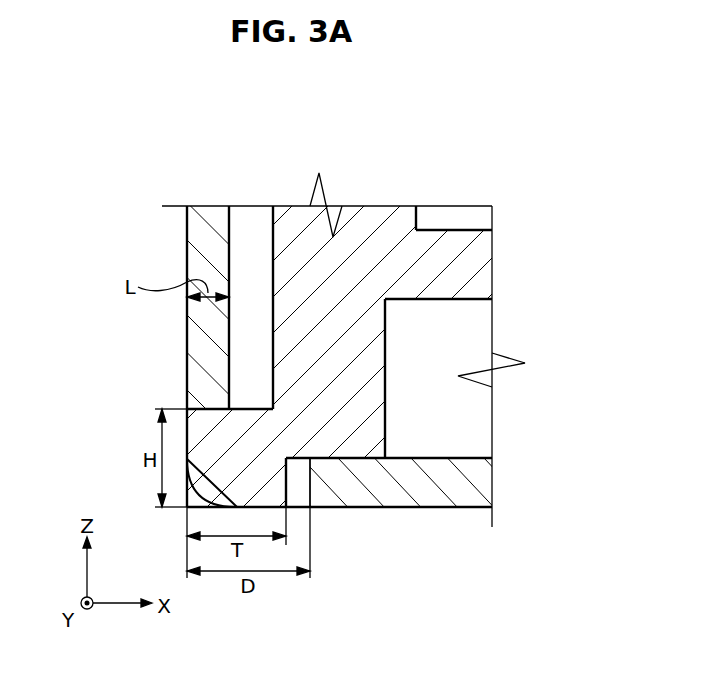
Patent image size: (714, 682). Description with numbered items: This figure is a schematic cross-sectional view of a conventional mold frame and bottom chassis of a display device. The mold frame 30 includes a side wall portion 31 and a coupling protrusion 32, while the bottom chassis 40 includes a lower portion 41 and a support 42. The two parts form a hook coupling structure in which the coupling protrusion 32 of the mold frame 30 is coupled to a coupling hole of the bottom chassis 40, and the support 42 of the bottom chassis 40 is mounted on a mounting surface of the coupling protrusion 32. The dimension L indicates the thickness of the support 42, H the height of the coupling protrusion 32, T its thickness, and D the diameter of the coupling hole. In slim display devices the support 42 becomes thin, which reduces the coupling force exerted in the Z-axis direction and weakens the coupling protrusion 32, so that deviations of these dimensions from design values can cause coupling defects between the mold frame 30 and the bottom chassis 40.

The mold frame 30 is at (120, 323).
The side wall portion 31 is at (330, 328).
The coupling protrusion 32 is at (258, 433).
The bottom chassis 40 is at (440, 146).
The lower portion 41 is at (417, 483).
The support 42 is at (223, 257).